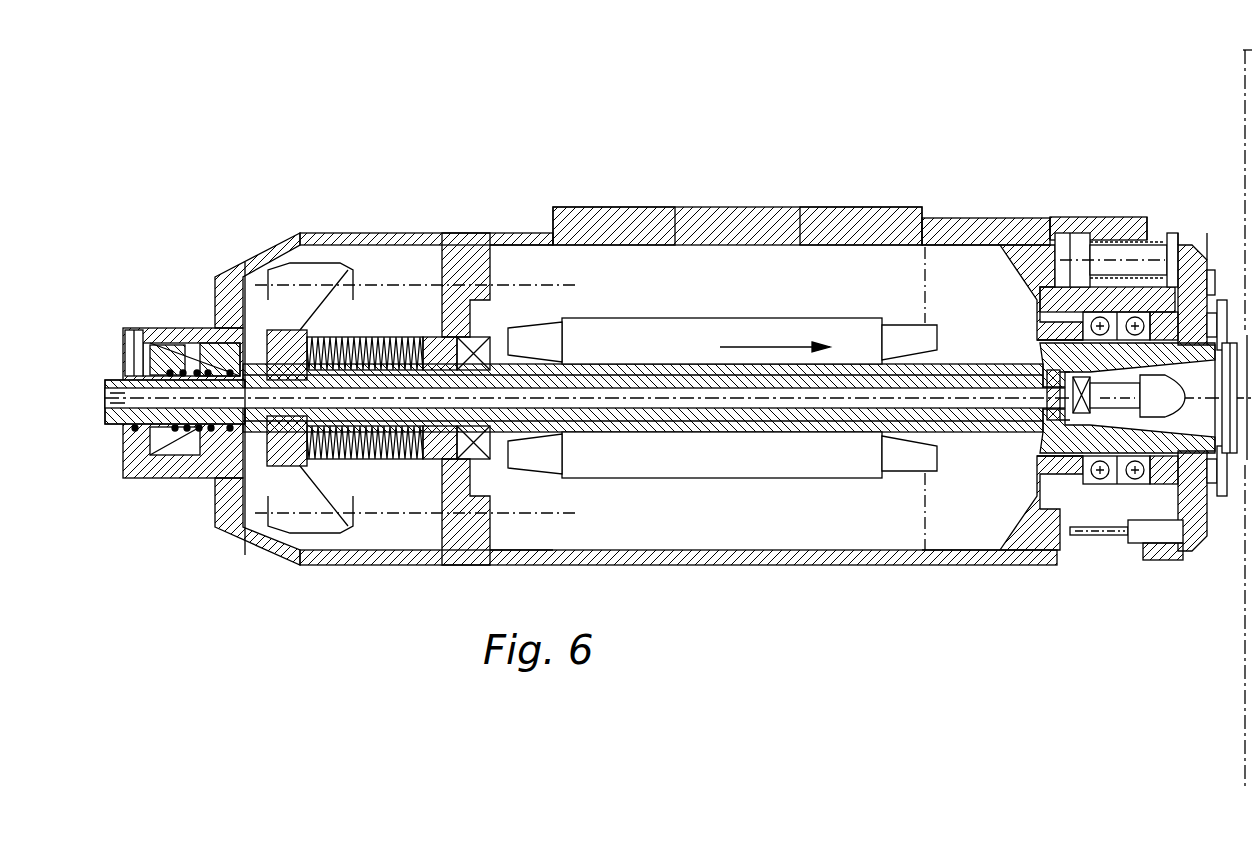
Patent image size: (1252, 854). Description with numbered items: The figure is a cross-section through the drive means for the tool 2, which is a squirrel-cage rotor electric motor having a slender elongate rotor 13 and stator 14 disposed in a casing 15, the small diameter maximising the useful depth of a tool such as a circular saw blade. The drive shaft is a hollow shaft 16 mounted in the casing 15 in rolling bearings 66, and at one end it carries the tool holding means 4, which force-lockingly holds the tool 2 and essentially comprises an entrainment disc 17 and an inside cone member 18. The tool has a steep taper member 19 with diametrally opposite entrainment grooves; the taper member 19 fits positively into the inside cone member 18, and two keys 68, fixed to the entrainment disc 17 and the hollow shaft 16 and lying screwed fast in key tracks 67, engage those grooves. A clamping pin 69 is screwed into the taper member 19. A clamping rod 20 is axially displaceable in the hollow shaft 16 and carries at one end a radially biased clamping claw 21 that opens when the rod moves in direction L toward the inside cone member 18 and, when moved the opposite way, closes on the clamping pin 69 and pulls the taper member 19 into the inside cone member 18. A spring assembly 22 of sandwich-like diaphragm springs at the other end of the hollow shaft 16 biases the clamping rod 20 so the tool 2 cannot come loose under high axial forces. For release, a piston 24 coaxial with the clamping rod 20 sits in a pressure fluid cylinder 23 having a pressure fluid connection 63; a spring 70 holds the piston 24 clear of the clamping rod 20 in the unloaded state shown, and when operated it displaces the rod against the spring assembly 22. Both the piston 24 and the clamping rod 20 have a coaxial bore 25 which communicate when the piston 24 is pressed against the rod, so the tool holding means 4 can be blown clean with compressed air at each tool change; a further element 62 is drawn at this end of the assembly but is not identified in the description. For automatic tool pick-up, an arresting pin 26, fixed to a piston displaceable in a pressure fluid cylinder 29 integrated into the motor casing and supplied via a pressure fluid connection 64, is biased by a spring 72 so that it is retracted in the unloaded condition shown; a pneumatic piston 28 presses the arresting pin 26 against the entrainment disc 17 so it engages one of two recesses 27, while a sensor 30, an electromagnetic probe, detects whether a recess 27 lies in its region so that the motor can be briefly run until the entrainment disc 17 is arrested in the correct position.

The tool 2 is at (1251, 712).
The tool holding means 4 is at (1033, 480).
The rotor 13 is at (627, 333).
The stator 14 is at (707, 270).
The casing 15 is at (812, 235).
The hollow shaft 16 is at (794, 440).
The entrainment disc 17 is at (1197, 240).
The inside cone member 18 is at (1107, 478).
The taper member 19 is at (1135, 432).
The clamping rod 20 is at (690, 425).
The clamping claw 21 is at (935, 447).
The spring assembly 22 is at (377, 340).
The pressure fluid cylinder 23 is at (200, 470).
The piston 24 is at (172, 345).
The coaxial bore 25 is at (165, 407).
The arresting pin 26 is at (1113, 240).
The recess 27 is at (1187, 240).
The pneumatic piston 28 is at (1075, 237).
The pressure fluid cylinder 29 is at (1093, 238).
The sensor 30 is at (1162, 525).
The cap 62 is at (210, 440).
The pressure fluid connection 63 is at (143, 328).
The pressure fluid connection 64 is at (1047, 217).
The rolling bearings 66 is at (480, 345).
The key tracks 67 is at (1207, 243).
The keys 68 is at (1222, 470).
The clamping pin 69 is at (1040, 377).
The spring 70 is at (210, 340).
The spring 72 is at (1135, 240).